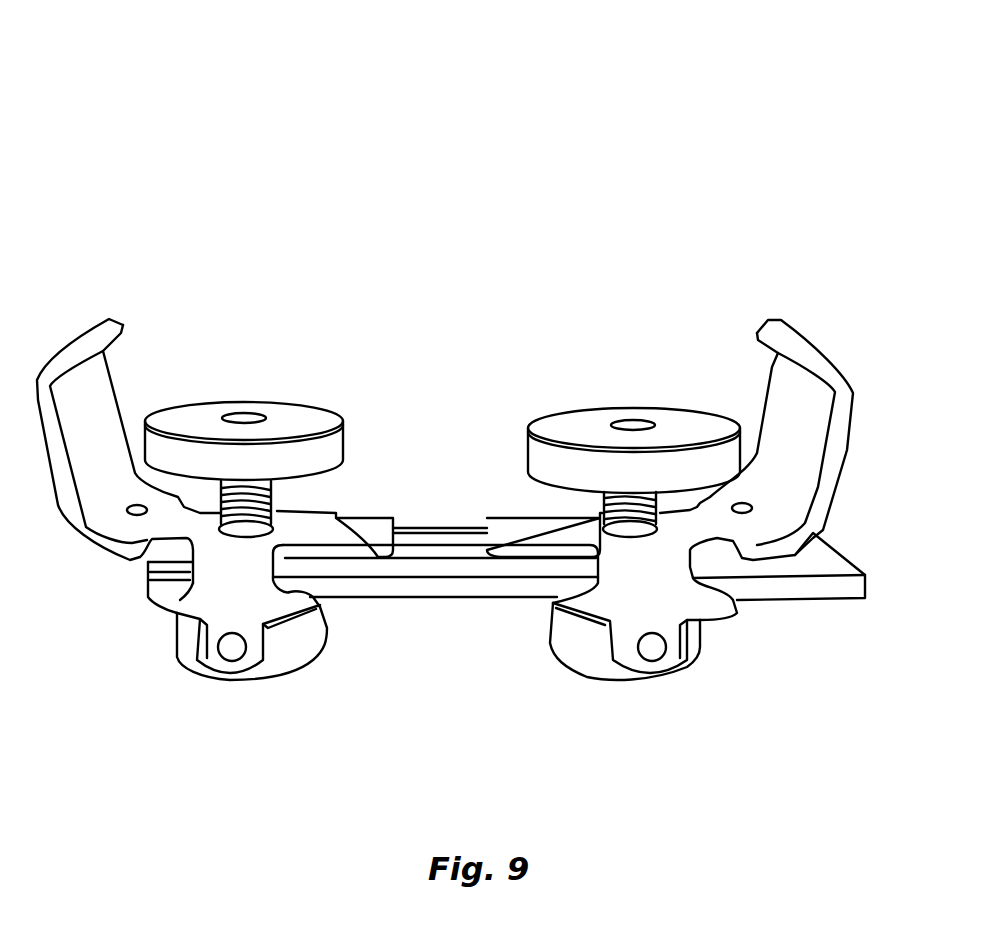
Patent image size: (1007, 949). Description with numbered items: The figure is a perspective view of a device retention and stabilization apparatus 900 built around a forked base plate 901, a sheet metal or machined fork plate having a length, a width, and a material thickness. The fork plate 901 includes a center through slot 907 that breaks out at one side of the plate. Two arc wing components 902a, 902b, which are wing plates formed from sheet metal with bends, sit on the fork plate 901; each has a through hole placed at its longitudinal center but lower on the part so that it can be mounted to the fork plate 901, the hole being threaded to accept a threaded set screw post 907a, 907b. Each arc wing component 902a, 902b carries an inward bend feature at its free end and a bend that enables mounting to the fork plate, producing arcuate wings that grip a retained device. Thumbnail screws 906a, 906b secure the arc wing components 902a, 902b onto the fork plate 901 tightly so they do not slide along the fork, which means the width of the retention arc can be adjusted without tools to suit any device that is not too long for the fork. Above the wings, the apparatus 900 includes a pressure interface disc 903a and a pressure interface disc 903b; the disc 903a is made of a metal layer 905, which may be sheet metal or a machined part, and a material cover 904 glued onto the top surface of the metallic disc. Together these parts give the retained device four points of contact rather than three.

The device retention and stabilization apparatus 900 is at (462, 209).
The forked base plate 901 is at (448, 600).
The arc wing component 902a is at (229, 593).
The arc wing component 902b is at (661, 600).
The pressure interface disc 903a is at (261, 378).
The pressure interface disc 903b is at (608, 392).
The material cover 904 is at (243, 401).
The metal layer 905 is at (347, 441).
The thumbnail screw 906a is at (265, 680).
The thumbnail screw 906b is at (620, 678).
The center through slot 907 is at (428, 557).
The threaded set screw post 907a is at (273, 498).
The threaded set screw post 907b is at (602, 511).